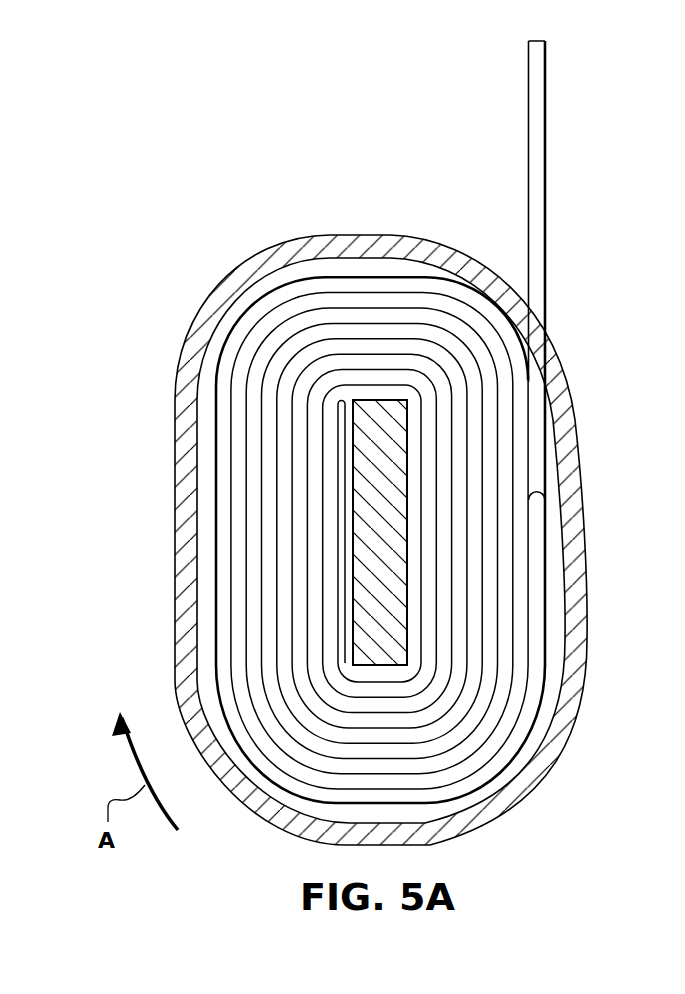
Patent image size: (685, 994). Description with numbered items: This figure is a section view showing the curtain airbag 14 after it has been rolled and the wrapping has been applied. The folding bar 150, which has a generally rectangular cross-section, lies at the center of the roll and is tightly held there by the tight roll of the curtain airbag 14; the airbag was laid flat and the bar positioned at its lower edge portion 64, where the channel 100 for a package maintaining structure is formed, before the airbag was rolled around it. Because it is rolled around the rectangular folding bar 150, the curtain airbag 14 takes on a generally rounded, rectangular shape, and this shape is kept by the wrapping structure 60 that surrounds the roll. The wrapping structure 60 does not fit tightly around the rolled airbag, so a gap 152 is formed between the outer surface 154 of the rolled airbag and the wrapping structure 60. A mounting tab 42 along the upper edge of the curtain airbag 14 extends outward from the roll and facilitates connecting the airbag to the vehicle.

The wrapping structure 60 is at (340, 247).
The mounting tab 42 is at (537, 177).
The curtain airbag 14 is at (253, 392).
The lower edge portion 64 is at (343, 417).
The channel 100 is at (345, 540).
The folding bar 150 is at (375, 563).
The outer surface 154 is at (545, 657).
The gap 152 is at (550, 703).